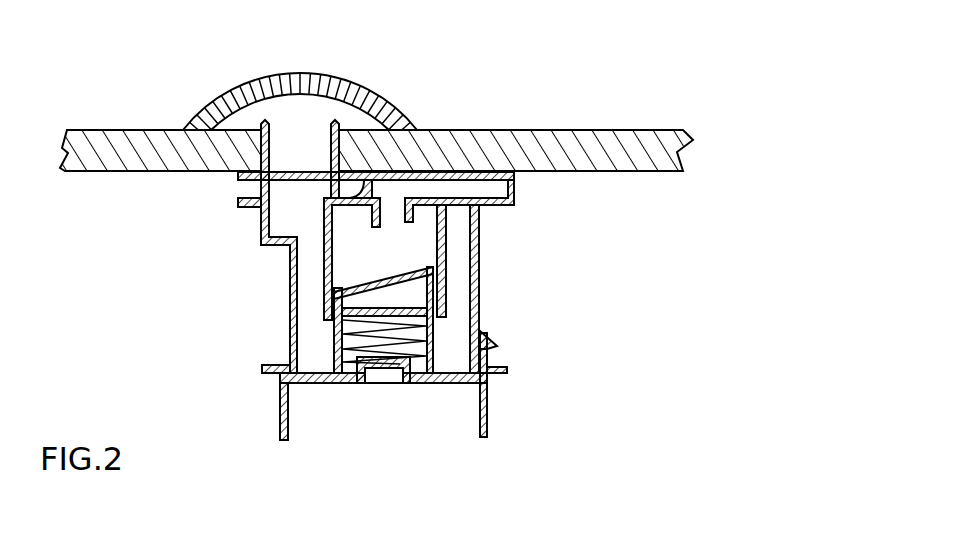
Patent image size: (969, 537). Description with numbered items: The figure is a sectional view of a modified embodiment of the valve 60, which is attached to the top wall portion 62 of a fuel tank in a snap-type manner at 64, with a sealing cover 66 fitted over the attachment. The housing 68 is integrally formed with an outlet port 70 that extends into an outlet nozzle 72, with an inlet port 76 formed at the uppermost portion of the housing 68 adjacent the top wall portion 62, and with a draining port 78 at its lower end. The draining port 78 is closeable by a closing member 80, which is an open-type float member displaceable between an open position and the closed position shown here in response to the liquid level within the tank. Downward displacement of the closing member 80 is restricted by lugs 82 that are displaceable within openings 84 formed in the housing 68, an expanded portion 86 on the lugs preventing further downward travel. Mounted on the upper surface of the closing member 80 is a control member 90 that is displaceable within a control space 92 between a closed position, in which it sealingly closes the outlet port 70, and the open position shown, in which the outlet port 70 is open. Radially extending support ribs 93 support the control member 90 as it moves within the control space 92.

The valve 60 is at (158, 290).
The top wall portion 62 is at (540, 130).
The snap-type attachment 64 is at (245, 118).
The sealing cover 66 is at (313, 78).
The housing 68 is at (480, 256).
The outlet port 70 is at (383, 226).
The outlet nozzle 72 is at (514, 205).
The inlet port 76 is at (247, 190).
The draining port 78 is at (453, 363).
The closing member 80 is at (490, 408).
The lugs 82 is at (490, 352).
The openings 84 is at (507, 371).
The expanded portion 86 is at (497, 337).
The control member 90 is at (340, 302).
The control space 92 is at (385, 252).
The support ribs 93 is at (330, 260).